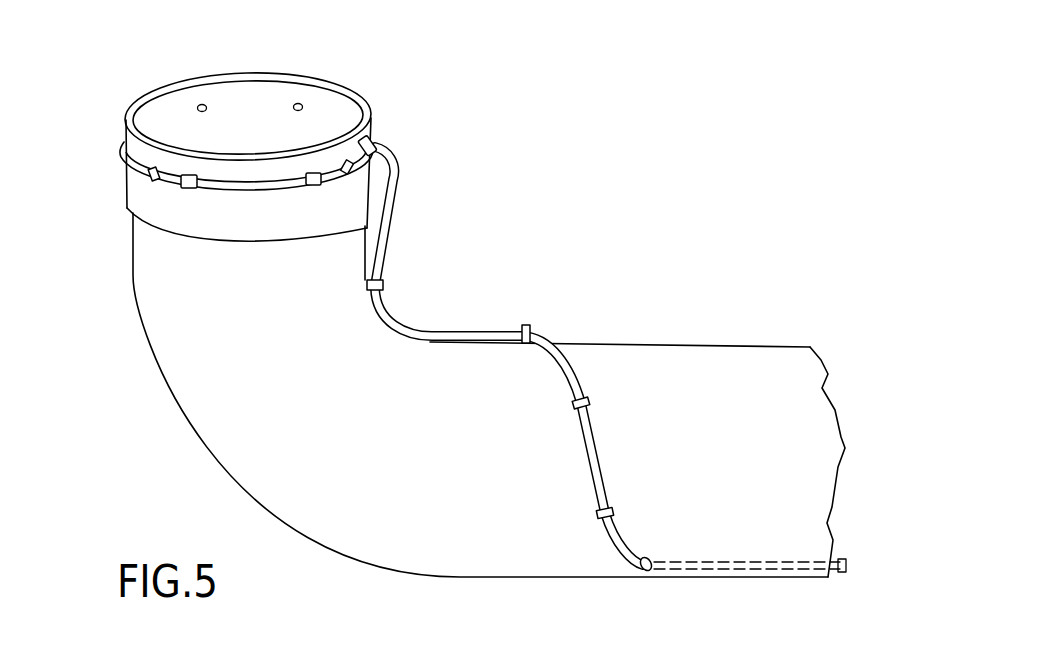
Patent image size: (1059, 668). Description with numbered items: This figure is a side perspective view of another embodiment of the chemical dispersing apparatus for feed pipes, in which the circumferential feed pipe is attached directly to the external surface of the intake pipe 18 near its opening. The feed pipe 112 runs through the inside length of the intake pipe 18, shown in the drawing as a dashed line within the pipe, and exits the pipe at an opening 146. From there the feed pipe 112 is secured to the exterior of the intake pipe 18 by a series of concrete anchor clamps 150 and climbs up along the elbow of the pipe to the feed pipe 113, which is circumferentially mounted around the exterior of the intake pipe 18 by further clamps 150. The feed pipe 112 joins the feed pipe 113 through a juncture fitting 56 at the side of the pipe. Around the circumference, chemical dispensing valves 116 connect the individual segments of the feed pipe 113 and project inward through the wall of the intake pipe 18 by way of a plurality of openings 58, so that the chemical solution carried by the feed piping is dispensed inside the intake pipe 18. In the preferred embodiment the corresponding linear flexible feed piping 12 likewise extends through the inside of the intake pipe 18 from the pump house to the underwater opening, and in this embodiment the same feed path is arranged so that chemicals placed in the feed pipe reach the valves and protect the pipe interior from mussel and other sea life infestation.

The flexible feed piping 12 is at (390, 304).
The intake pipe 18 is at (664, 357).
The juncture fitting 56 is at (376, 142).
The openings 58 is at (198, 110).
The feed pipe 112 is at (758, 562).
The feed pipe 113 is at (371, 122).
The chemical dispensing valves 116 is at (200, 103).
The opening 146 is at (652, 568).
The concrete anchor clamps 150 is at (147, 178).